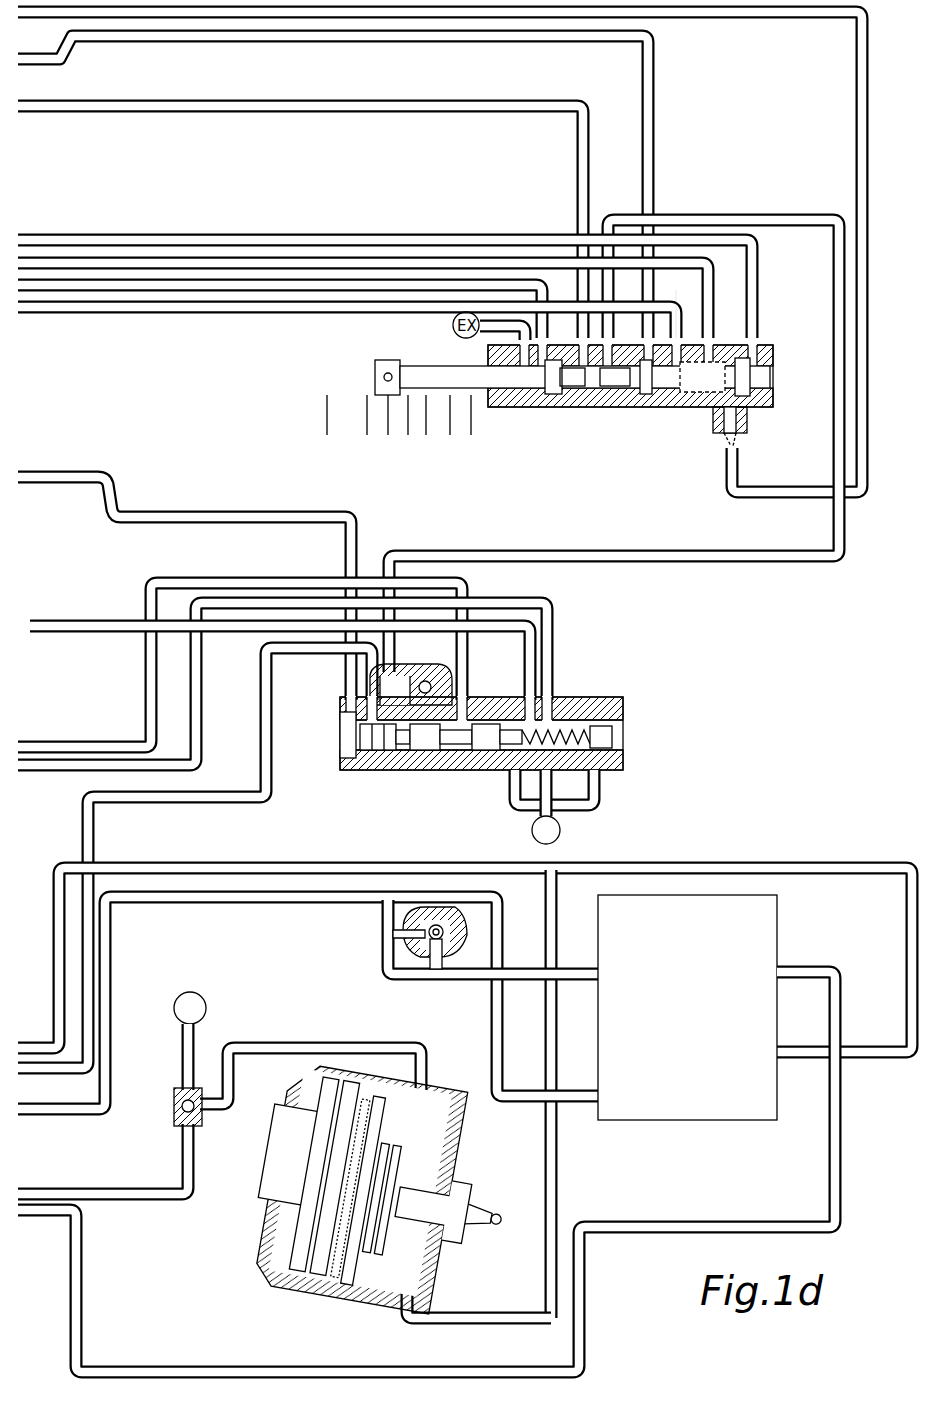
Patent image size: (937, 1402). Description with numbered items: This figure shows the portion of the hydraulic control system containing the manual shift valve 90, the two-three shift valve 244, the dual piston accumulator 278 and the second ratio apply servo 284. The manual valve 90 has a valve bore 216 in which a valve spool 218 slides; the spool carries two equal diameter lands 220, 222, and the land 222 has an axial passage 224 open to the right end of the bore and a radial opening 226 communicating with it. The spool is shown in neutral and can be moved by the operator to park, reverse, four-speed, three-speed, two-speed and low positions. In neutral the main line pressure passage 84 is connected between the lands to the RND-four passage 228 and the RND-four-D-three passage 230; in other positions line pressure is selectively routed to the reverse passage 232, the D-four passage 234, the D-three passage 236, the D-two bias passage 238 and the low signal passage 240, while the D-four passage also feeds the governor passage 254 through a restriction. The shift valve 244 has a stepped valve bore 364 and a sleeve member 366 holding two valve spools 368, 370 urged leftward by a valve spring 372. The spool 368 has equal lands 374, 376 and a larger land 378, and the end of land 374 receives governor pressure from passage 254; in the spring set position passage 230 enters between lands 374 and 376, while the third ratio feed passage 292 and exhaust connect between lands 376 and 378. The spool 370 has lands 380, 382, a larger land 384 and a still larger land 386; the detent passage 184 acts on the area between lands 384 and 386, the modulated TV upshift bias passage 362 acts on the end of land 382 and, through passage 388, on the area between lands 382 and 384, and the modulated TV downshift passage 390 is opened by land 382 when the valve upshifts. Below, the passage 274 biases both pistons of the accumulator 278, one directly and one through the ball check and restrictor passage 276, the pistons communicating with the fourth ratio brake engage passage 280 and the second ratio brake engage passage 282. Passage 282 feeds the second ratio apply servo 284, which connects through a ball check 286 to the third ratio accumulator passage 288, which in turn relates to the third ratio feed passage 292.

The main line pressure passage 84 is at (44, 58).
The manual shift valve 90 is at (569, 411).
The detent passage 184 is at (171, 583).
The valve bore 216 is at (637, 390).
The valve spool 218 is at (428, 372).
The land 220 is at (558, 400).
The land 222 is at (746, 420).
The axial passage 224 is at (742, 376).
The radial opening 226 is at (690, 335).
The RND4 passage 228 is at (49, 108).
The RND4D3 passage 230 is at (810, 205).
The reverse passage 232 is at (495, 285).
The D4 passage 234 is at (252, 307).
The D3 passage 236 is at (293, 263).
The D2 bias passage 238 is at (100, 16).
The low signal passage 240 is at (126, 240).
The 2-3 shift valve 244 is at (486, 740).
The governor passage 254 is at (40, 477).
The passage 274 is at (32, 1111).
The ball check and restrictor passage 276 is at (380, 935).
The dual piston accumulator 278 is at (662, 1121).
The fourth ratio brake engage passage 280 is at (790, 968).
The second ratio brake engage passage 282 is at (36, 1040).
The second ratio apply servo 284 is at (262, 1200).
The ball check 286 is at (176, 1094).
The third ratio accumulator passage 288 is at (128, 1193).
The third ratio feed passage 292 is at (30, 1086).
The modulated TV upshift bias passage 362 is at (35, 770).
The stepped valve bore 364 is at (352, 748).
The sleeve member 366 is at (565, 706).
The valve spool 368 is at (346, 768).
The valve spool 370 is at (506, 772).
The valve spring 372 is at (612, 706).
The land 374 is at (358, 735).
The land 376 is at (358, 712).
The land 378 is at (418, 770).
The land 380 is at (484, 708).
The land 382 is at (543, 790).
The land 384 is at (470, 706).
The land 386 is at (421, 682).
The passage 388 is at (595, 806).
The modulated TV downshift pressure passage 390 is at (112, 626).